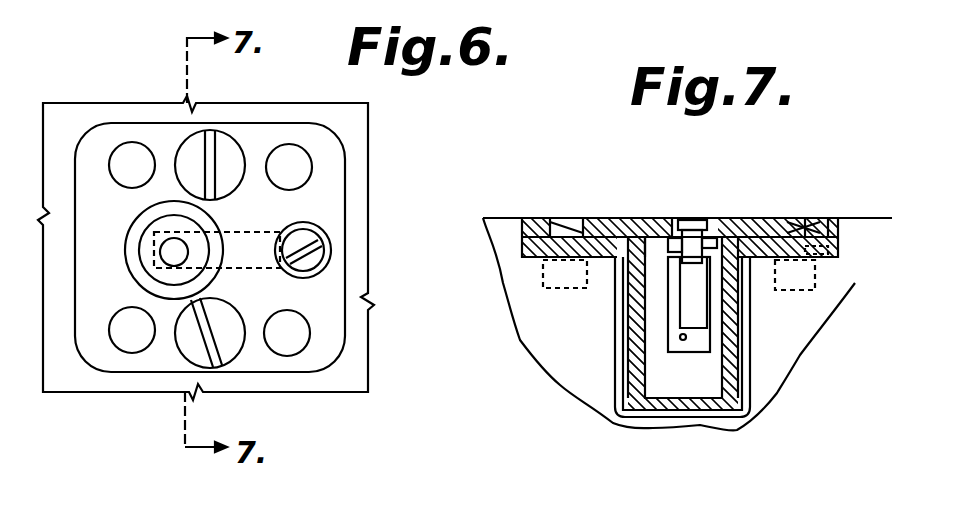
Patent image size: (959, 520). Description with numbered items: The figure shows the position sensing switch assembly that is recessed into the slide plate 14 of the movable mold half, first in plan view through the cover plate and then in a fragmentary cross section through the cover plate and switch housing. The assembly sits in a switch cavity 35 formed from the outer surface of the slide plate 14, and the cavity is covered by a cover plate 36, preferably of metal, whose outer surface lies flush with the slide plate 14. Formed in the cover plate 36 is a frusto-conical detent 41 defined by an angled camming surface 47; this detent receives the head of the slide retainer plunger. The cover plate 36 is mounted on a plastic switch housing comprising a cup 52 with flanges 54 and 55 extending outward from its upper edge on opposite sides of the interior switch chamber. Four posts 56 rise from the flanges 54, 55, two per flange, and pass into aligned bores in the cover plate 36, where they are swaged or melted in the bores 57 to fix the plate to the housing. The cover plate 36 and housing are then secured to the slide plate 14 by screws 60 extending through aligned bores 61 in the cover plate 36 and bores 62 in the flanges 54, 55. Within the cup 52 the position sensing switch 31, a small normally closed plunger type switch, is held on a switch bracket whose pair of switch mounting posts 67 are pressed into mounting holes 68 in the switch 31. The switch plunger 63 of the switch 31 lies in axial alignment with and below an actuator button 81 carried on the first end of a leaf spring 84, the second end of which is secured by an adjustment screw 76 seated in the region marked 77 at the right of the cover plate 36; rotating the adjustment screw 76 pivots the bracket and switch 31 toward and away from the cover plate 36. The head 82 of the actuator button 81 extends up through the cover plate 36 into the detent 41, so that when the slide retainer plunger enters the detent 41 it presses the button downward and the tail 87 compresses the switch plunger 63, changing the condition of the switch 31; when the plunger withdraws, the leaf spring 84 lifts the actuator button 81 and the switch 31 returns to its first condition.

In FIG. 6, the slide plate 14 is at (369, 187).
In FIG. 7, the position sensing switch 31 is at (700, 305).
In FIG. 7, the switch cavity 35 is at (623, 333).
In FIG. 6, the cover plate 36 is at (358, 235).
In FIG. 7, the cover plate 36 is at (516, 229).
In FIG. 6, the detent 41 is at (162, 221).
In FIG. 7, the detent 41 is at (658, 217).
In FIG. 6, the angled camming surface 47 is at (130, 245).
In FIG. 7, the angled camming surface 47 is at (717, 220).
In FIG. 7, the cup 52 is at (620, 357).
In FIG. 6, the flange 54 is at (252, 125).
In FIG. 7, the flange 54 is at (528, 258).
In FIG. 6, the flange 55 is at (265, 360).
In FIG. 7, the flange 55 is at (832, 262).
In FIG. 6, the posts 56 is at (143, 152).
In FIG. 6, the bores 57 is at (117, 160).
In FIG. 6, the screws 60 is at (221, 143).
In FIG. 7, the screws 60 is at (584, 215).
In FIG. 7, the bores 61 is at (548, 216).
In FIG. 7, the bores 62 is at (861, 241).
In FIG. 7, the switch plunger 63 is at (752, 273).
In FIG. 7, the switch mounting posts 67 is at (743, 342).
In FIG. 7, the mounting holes 68 is at (686, 340).
In FIG. 6, the adjustment screw 76 is at (320, 259).
In FIG. 6, the boss 77 is at (300, 233).
In FIG. 6, the actuator button 81 is at (176, 253).
In FIG. 7, the actuator button 81 is at (716, 222).
In FIG. 7, the head 82 is at (692, 226).
In FIG. 6, the leaf spring 84 is at (258, 240).
In FIG. 7, the leaf spring 84 is at (668, 240).
In FIG. 7, the tail 87 is at (682, 222).